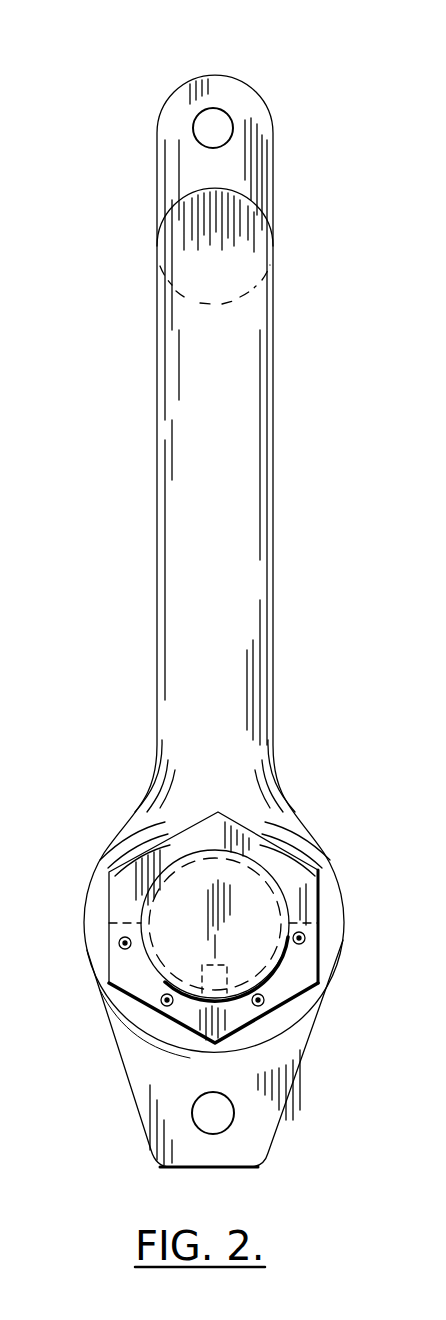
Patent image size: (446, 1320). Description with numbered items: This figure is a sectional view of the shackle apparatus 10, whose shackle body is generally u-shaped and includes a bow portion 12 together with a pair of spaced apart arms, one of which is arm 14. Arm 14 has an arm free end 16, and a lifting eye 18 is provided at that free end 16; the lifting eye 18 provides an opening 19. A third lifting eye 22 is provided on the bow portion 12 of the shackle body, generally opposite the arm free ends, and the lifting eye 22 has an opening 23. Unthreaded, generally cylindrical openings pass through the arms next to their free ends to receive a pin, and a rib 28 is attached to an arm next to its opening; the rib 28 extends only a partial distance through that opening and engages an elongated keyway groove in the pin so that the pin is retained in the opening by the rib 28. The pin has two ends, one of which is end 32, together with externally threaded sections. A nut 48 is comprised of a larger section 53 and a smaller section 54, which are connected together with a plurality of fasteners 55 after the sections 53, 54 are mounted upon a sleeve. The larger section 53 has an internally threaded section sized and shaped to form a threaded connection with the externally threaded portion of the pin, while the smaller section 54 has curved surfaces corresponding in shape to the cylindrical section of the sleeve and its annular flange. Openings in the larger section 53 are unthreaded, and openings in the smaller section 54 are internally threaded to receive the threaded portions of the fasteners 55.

The shackle apparatus 10 is at (152, 80).
The bow portion 12 is at (157, 431).
The arm 14 is at (228, 550).
The arm free end 16 is at (138, 1020).
The lifting eye 18 is at (250, 1140).
The opening 19 is at (208, 1113).
The third lifting eye 22 is at (250, 181).
The opening 23 is at (216, 124).
The rib 28 is at (196, 931).
The pin end 32 is at (190, 882).
The nut 48 is at (118, 886).
The larger section 53 is at (280, 862).
The smaller section 54 is at (233, 1018).
The fasteners 55 is at (165, 996).